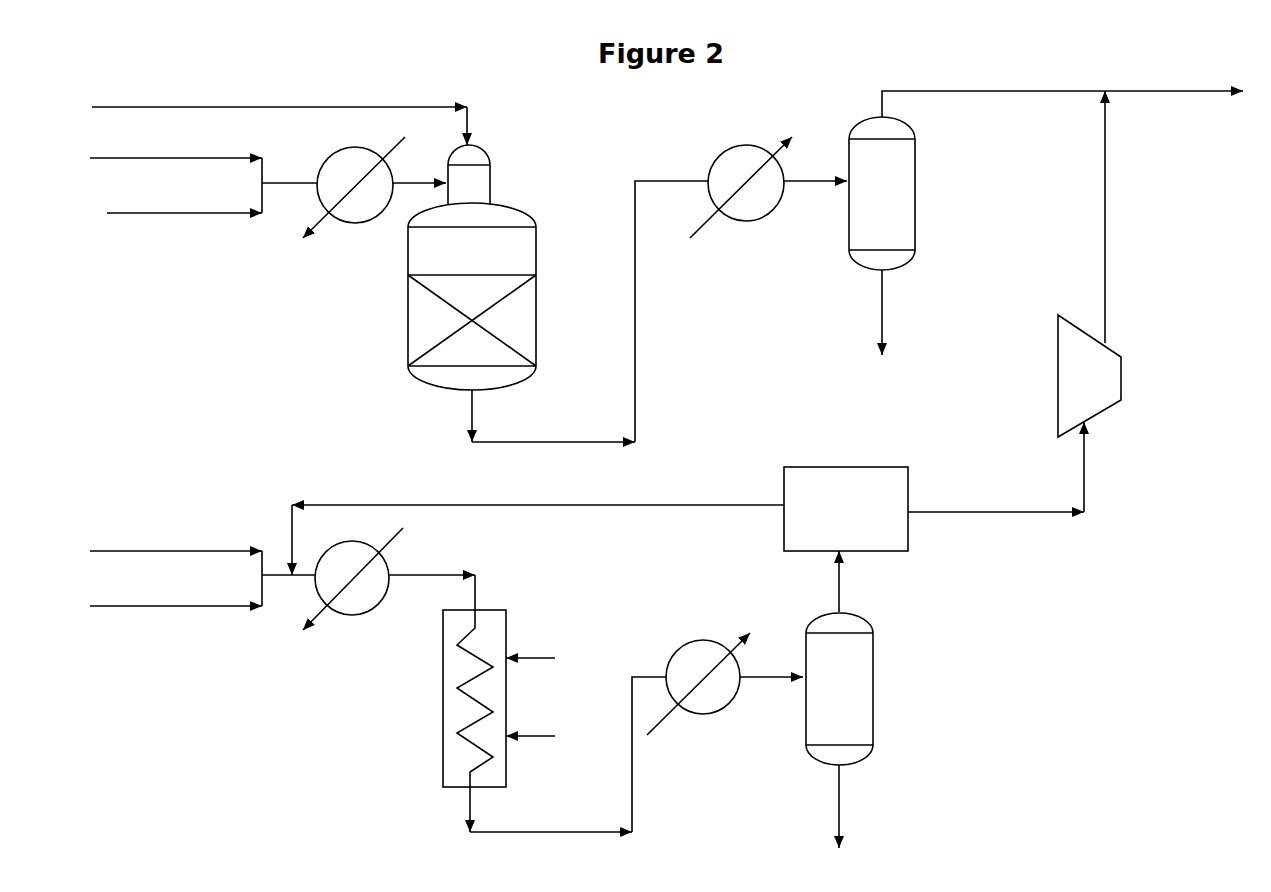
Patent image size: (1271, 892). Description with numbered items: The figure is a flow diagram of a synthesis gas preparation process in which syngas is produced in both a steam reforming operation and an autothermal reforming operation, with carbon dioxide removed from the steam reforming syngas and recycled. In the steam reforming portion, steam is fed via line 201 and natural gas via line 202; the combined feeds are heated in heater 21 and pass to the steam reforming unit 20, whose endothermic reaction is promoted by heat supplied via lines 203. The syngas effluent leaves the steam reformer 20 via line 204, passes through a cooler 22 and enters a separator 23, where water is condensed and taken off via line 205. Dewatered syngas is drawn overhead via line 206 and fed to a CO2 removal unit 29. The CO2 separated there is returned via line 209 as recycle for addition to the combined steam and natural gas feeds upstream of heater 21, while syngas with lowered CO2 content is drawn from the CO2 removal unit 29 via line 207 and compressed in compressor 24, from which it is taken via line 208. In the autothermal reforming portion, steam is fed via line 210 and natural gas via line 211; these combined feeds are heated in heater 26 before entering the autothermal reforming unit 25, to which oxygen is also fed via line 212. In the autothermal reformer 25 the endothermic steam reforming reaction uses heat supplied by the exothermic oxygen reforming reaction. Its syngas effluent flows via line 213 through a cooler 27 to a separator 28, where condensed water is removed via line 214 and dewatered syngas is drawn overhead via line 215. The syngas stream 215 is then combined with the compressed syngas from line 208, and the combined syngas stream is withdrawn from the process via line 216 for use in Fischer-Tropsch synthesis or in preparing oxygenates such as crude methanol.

The steam reforming unit 20 is at (442, 685).
The heater 21 is at (354, 616).
The cooler 22 is at (703, 716).
The separator 23 is at (875, 688).
The compressor 24 is at (1052, 368).
The autothermal reforming unit 25 is at (408, 300).
The heater 26 is at (344, 222).
The cooler 27 is at (743, 222).
The separator 28 is at (918, 194).
The CO2 removal unit 29 is at (850, 465).
The line 201 is at (165, 550).
The line 202 is at (165, 605).
The lines 203 is at (542, 665).
The line 204 is at (548, 832).
The line 205 is at (838, 827).
The line 206 is at (840, 603).
The line 207 is at (1036, 515).
The line 208 is at (1106, 225).
The line 209 is at (552, 507).
The line 210 is at (153, 157).
The line 211 is at (155, 211).
The line 212 is at (153, 105).
The line 213 is at (567, 440).
The line 214 is at (884, 316).
The line 215 is at (980, 88).
The line 216 is at (1188, 88).